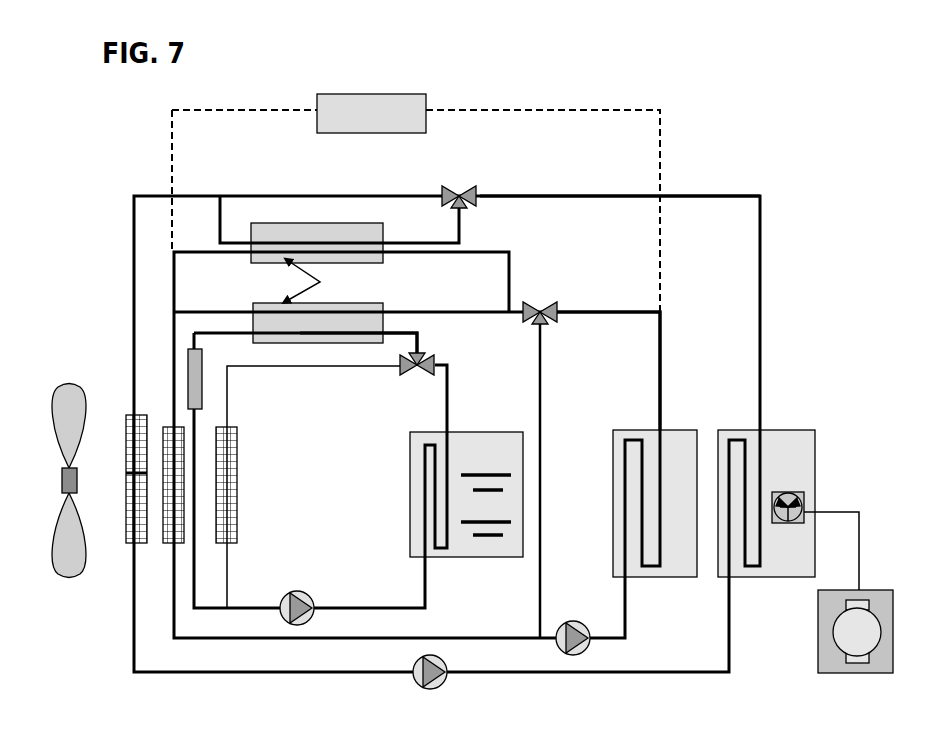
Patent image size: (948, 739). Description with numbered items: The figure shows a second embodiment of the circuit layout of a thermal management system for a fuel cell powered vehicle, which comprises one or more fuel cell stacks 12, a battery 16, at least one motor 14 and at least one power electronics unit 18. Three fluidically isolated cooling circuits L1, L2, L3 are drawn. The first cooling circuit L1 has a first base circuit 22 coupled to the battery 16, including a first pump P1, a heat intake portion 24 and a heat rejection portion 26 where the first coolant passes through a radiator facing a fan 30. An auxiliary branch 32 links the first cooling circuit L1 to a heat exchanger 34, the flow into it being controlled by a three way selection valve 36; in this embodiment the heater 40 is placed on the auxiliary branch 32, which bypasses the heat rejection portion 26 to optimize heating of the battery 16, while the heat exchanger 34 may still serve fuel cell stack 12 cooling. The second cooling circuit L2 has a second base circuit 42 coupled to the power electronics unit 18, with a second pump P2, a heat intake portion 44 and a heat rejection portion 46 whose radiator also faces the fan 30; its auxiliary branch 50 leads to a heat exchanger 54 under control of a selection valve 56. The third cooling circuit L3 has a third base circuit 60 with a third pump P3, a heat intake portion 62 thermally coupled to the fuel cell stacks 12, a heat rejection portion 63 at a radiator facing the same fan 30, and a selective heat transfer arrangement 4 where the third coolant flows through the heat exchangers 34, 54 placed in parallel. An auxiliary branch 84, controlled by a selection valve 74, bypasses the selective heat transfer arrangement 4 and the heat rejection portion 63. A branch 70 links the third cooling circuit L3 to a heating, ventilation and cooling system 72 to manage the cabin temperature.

The selective heat transfer arrangement 4 is at (312, 282).
The fuel cell stack 12 is at (642, 428).
The motor 14 is at (887, 585).
The battery 16 is at (495, 430).
The power electronics unit 18 is at (768, 428).
The first base circuit 22 is at (243, 368).
The heat intake portion 24 is at (425, 488).
The heat rejection portion 26 is at (223, 451).
The fan 30 is at (70, 515).
The auxiliary branch 32 is at (417, 345).
The heat exchanger 34 is at (341, 332).
The selection valve 36 is at (412, 372).
The heater 40 is at (201, 368).
The second base circuit 42 is at (553, 196).
The heat intake portion 44 is at (753, 567).
The heat rejection portion 46 is at (127, 535).
The auxiliary branch 50 is at (218, 243).
The heat exchanger 54 is at (328, 242).
The selection valve 56 is at (462, 186).
The third base circuit 60 is at (582, 312).
The heat intake portion 62 is at (625, 523).
The heat rejection portion 63 is at (172, 425).
The branch 70 is at (660, 172).
The heating, ventilation and cooling system 72 is at (362, 123).
The selection valve 74 is at (543, 325).
The auxiliary branch 84 is at (540, 468).
The first cooling circuit L1 is at (457, 400).
The second cooling circuit L2 is at (774, 355).
The third cooling circuit L3 is at (670, 365).
The first pump P1 is at (308, 592).
The second pump P2 is at (413, 687).
The third pump P3 is at (556, 628).